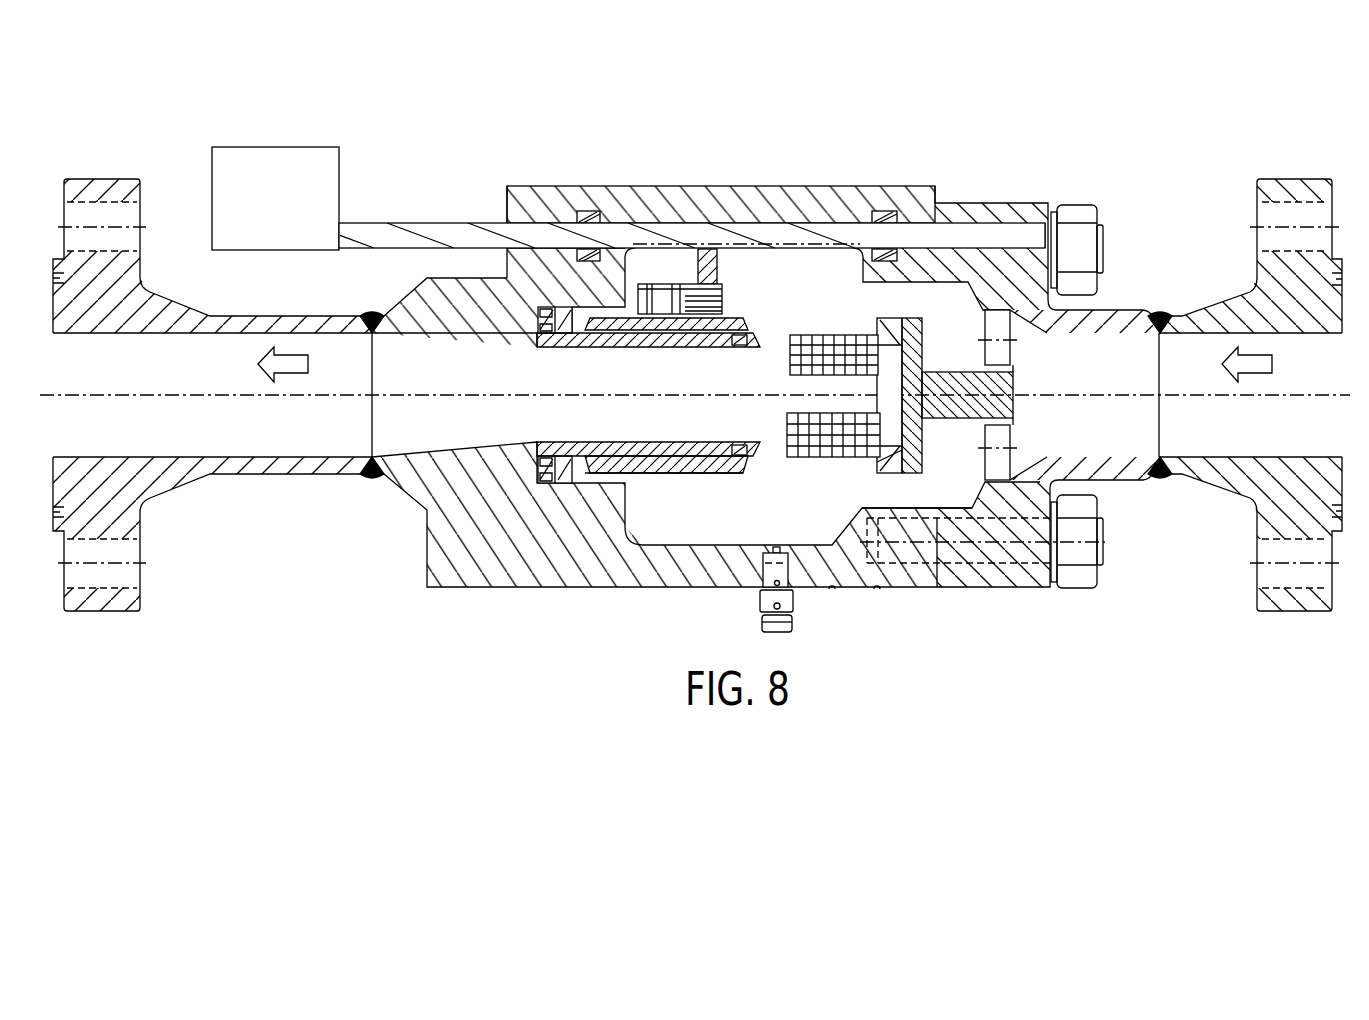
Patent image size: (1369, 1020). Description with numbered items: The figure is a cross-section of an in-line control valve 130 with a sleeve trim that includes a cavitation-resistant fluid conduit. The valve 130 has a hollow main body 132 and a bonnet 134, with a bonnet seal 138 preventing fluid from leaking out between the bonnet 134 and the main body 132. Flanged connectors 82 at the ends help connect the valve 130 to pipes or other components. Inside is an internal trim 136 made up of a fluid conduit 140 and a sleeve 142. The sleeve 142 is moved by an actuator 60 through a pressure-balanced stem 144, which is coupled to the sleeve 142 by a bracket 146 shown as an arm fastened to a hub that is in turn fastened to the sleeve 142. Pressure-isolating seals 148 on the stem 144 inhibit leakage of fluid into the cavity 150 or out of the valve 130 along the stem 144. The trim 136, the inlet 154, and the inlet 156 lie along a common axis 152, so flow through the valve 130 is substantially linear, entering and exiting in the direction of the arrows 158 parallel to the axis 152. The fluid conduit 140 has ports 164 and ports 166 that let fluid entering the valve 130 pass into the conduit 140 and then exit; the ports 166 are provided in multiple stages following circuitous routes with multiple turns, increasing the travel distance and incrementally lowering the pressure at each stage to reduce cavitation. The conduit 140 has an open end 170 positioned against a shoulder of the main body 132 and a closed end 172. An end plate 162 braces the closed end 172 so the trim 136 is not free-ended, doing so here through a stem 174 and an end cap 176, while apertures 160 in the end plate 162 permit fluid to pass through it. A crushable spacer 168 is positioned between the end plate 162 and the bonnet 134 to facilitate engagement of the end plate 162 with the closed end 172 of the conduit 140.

The actuator 60 is at (273, 147).
The flanged connectors 82 is at (178, 490).
The valve 130 is at (147, 121).
The main body 132 is at (478, 588).
The bonnet 134 is at (960, 203).
The trim 136 is at (729, 478).
The bonnet seal 138 is at (923, 510).
The fluid conduit 140 is at (635, 347).
The sleeve 142 is at (730, 318).
The stem 144 is at (747, 225).
The bracket 146 is at (692, 277).
The pressure-isolating seals 148 is at (583, 212).
The cavity 150 is at (997, 242).
The axis 152 is at (1300, 397).
The inlet 154 is at (1125, 453).
The inlet 156 is at (403, 455).
The arrows 158 is at (260, 356).
The apertures 160 is at (1010, 350).
The end plate 162 is at (1030, 378).
The ports 164 is at (768, 342).
The ports 166 is at (821, 380).
The crushable spacer 168 is at (1050, 285).
The open end 170 is at (555, 438).
The closed end 172 is at (868, 463).
The stem 174 is at (957, 418).
The end cap 176 is at (940, 352).